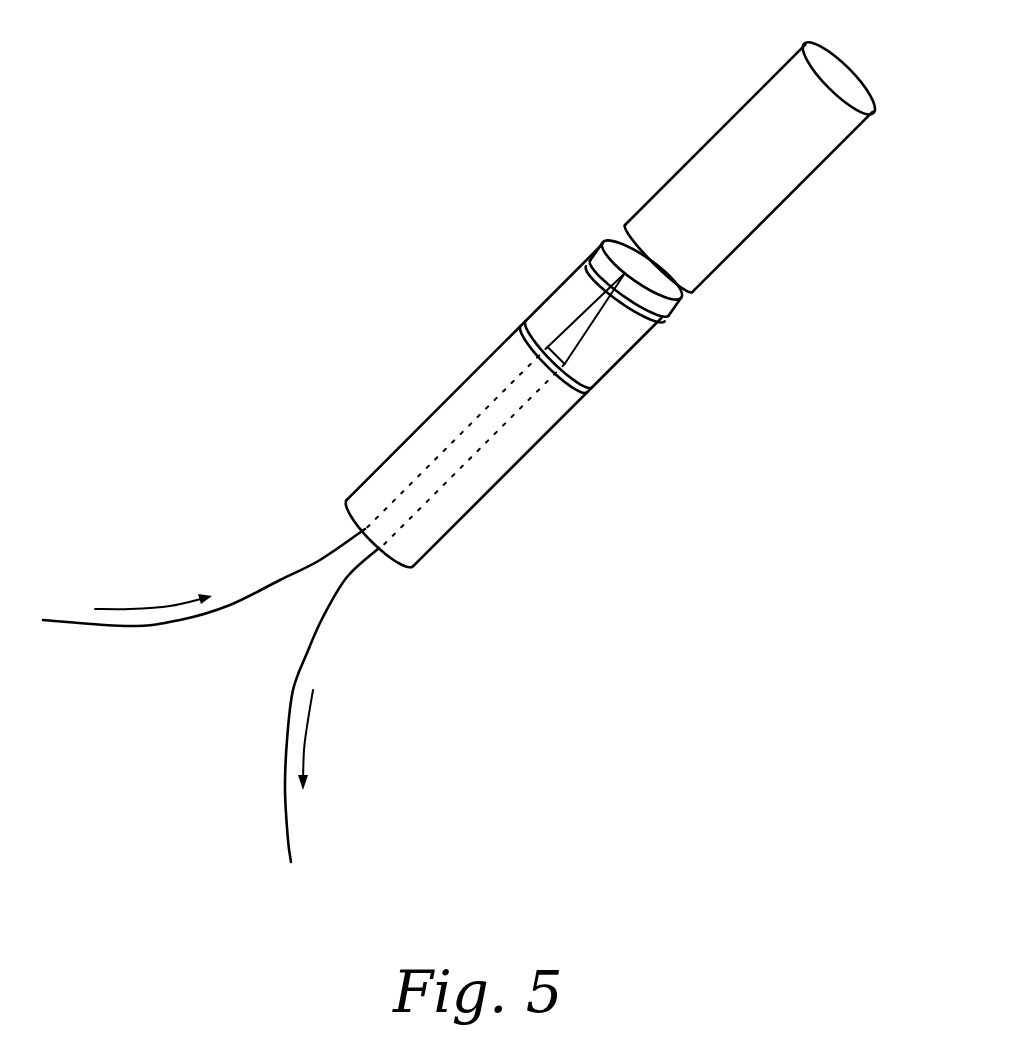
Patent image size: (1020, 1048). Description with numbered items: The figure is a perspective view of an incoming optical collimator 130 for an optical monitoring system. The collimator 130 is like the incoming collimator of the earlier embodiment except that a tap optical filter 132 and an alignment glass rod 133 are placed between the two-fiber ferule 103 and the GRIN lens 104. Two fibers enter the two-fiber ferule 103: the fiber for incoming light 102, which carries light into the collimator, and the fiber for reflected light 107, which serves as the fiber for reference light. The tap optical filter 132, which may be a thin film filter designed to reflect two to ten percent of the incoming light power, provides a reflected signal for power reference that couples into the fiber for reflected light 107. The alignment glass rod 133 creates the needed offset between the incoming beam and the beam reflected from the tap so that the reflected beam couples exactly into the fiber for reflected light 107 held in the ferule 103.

The fiber for incoming light 102 is at (77, 623).
The two-fiber ferule 103 is at (415, 430).
The GRIN lens 104 is at (702, 168).
The fiber for reflected light 107 is at (303, 663).
The incoming optical collimator 130 is at (600, 563).
The tap optical filter 132 is at (603, 252).
The alignment glass rod 133 is at (640, 347).